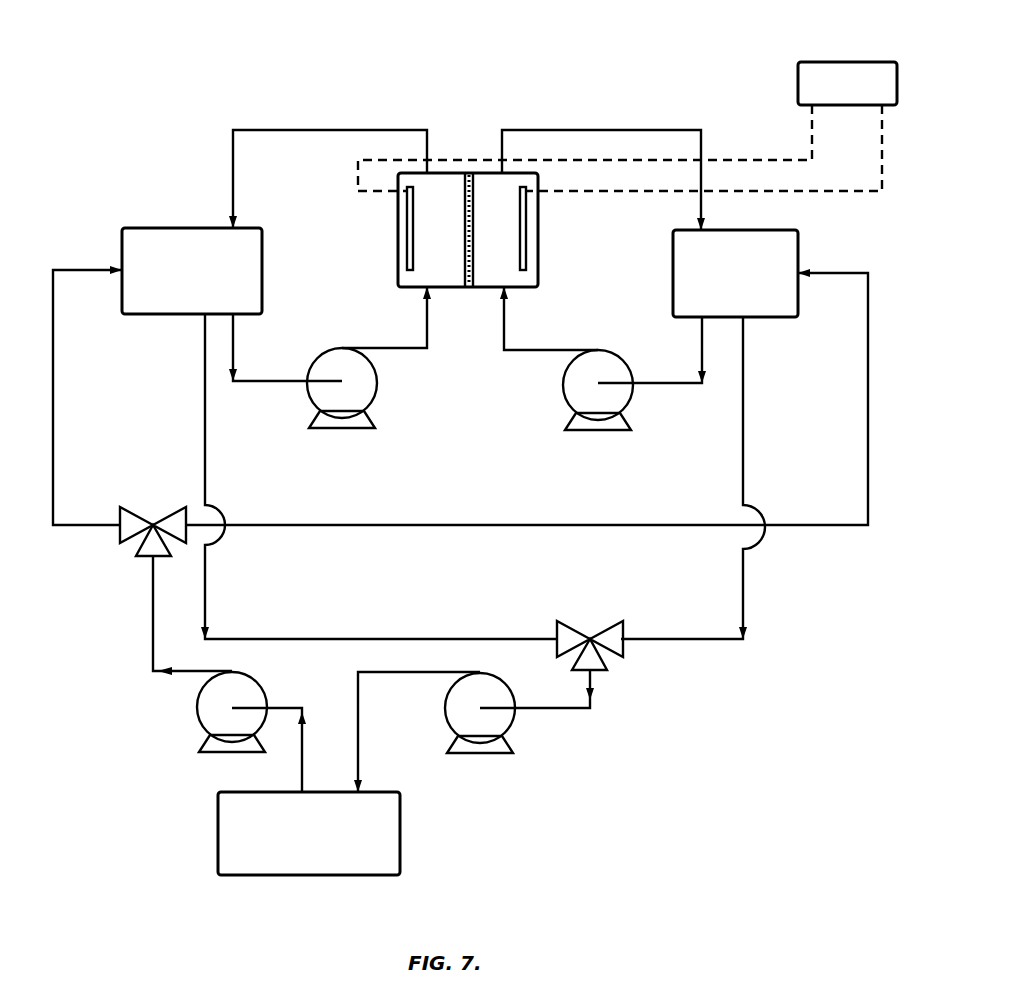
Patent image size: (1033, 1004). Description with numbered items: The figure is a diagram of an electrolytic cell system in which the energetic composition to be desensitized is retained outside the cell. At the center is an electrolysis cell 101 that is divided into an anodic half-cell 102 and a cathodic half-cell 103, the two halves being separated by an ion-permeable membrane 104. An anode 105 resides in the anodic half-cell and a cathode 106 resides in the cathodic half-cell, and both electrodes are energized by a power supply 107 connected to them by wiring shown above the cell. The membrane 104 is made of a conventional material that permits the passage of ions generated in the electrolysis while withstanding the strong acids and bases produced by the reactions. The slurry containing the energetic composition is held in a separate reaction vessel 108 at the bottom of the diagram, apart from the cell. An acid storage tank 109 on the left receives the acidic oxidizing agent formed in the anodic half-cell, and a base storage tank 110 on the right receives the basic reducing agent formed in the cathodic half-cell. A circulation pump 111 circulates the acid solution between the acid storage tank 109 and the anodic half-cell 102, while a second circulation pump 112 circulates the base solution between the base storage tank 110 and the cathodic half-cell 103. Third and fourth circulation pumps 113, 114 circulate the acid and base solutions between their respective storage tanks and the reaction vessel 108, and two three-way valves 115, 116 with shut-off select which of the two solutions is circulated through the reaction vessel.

The electrolysis cell 101 is at (378, 222).
The anodic half-cell 102 is at (428, 266).
The cathodic half-cell 103 is at (505, 268).
The ion-permeable membrane 104 is at (465, 270).
The anode 105 is at (410, 252).
The cathode 106 is at (526, 230).
The power supply 107 is at (845, 62).
The reaction vessel 108 is at (400, 830).
The acid storage tank 109 is at (142, 228).
The base storage tank 110 is at (798, 230).
The circulation pump 111 is at (376, 396).
The second circulation pump 112 is at (566, 398).
The third circulation pump 113 is at (204, 718).
The fourth circulation pump 114 is at (510, 724).
The three-way valve 115 is at (146, 512).
The three-way valve 116 is at (598, 628).